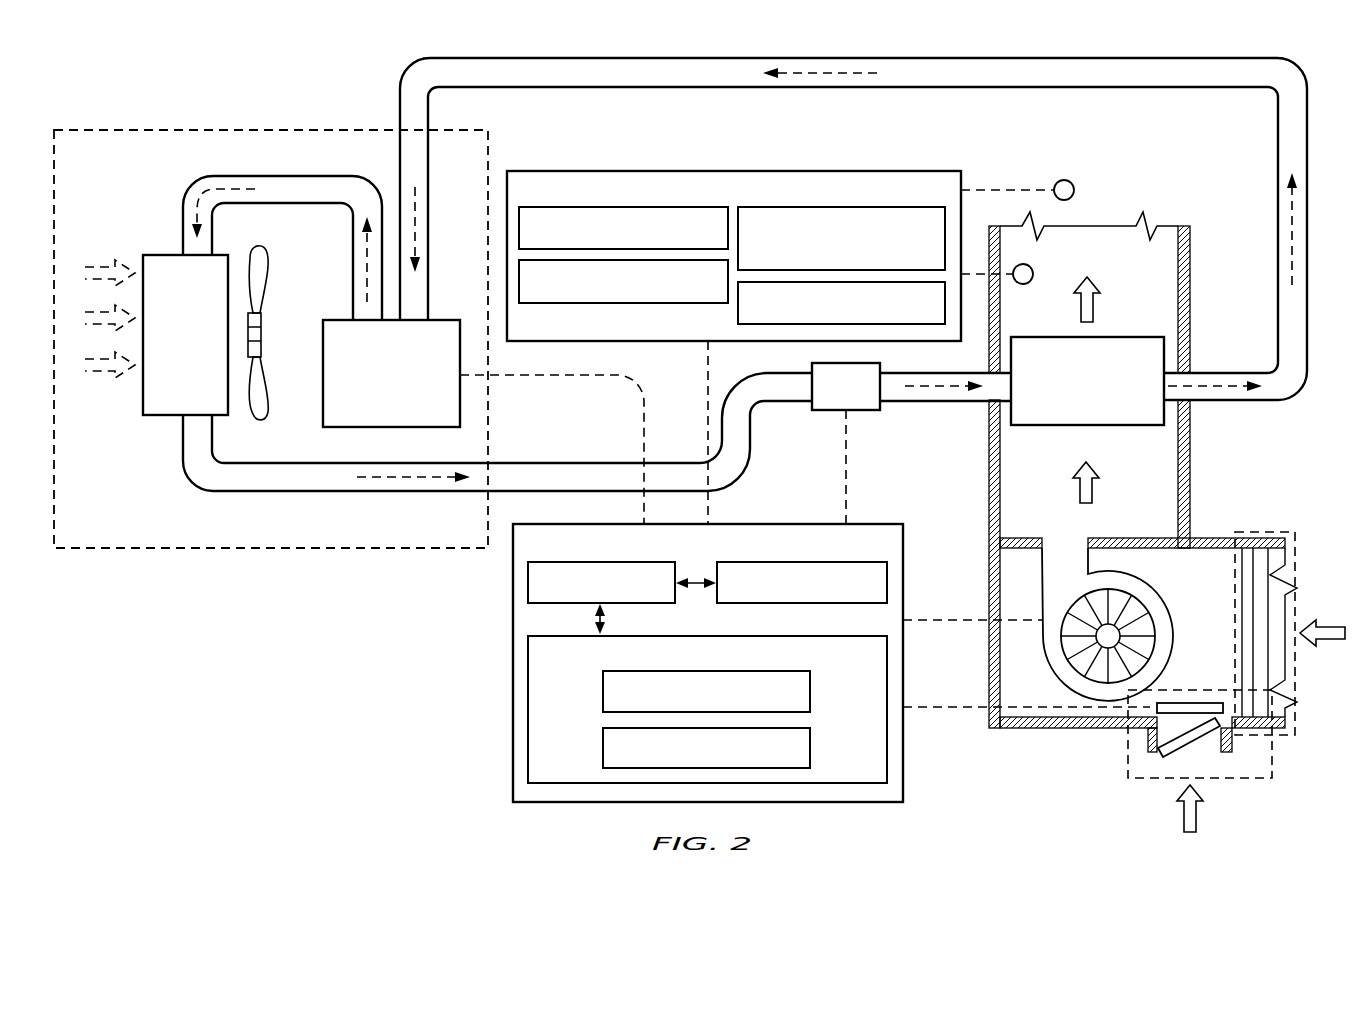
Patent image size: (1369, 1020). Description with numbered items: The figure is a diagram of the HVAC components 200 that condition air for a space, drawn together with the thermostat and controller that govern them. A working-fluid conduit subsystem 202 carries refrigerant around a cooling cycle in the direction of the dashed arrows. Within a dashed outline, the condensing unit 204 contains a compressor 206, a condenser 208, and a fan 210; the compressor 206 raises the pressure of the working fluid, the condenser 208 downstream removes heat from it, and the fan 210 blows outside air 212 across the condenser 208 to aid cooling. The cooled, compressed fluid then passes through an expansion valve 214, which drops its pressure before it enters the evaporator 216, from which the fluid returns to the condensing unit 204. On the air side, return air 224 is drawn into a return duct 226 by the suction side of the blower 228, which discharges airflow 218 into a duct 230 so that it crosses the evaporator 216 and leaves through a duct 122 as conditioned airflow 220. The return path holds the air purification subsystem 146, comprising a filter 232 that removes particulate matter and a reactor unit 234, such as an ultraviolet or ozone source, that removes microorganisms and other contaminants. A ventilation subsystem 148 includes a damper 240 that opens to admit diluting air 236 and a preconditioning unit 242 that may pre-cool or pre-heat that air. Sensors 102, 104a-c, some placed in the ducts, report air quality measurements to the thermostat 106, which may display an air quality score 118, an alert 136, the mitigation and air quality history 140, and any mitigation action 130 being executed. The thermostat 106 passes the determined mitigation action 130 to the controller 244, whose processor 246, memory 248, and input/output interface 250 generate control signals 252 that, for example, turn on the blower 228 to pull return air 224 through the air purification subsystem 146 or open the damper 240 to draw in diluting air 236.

The HVAC components 200 is at (272, 38).
The working-fluid conduit subsystem 202 is at (572, 59).
The condensing unit 204 is at (262, 130).
The compressor 206 is at (391, 373).
The condenser 208 is at (143, 397).
The fan 210 is at (262, 268).
The air 212 is at (100, 262).
The expansion valve 214 is at (846, 386).
The evaporator 216 is at (1087, 381).
The airflow 218 is at (1095, 486).
The conditioned airflow 220 is at (1098, 306).
The supply duct 122 is at (1192, 272).
The duct 230 is at (1190, 451).
The return duct 226 is at (1053, 728).
The blower 228 is at (1160, 598).
The air purification subsystem 146 is at (1289, 617).
The filter 232 is at (1258, 555).
The reactor unit 234 is at (1247, 597).
The return air 224 is at (1330, 655).
The ventilation subsystem 148 is at (1178, 735).
The preconditioning unit 242 is at (1195, 703).
The damper 240 is at (1198, 740).
The diluting air 236 is at (1203, 814).
The sensor 102 is at (1110, 220).
The sensors 104a-c is at (1071, 183).
The thermostat 106 is at (734, 256).
The air quality score 118 is at (623, 228).
The alert 136 is at (623, 281).
The mitigation and air quality history 140 is at (841, 238).
The mitigation action 130 is at (774, 497).
The controller 244 is at (708, 663).
The processor 246 is at (601, 582).
The input/output (I/O) interface 250 is at (802, 582).
The memory 248 is at (707, 709).
The control signals 252 is at (706, 748).